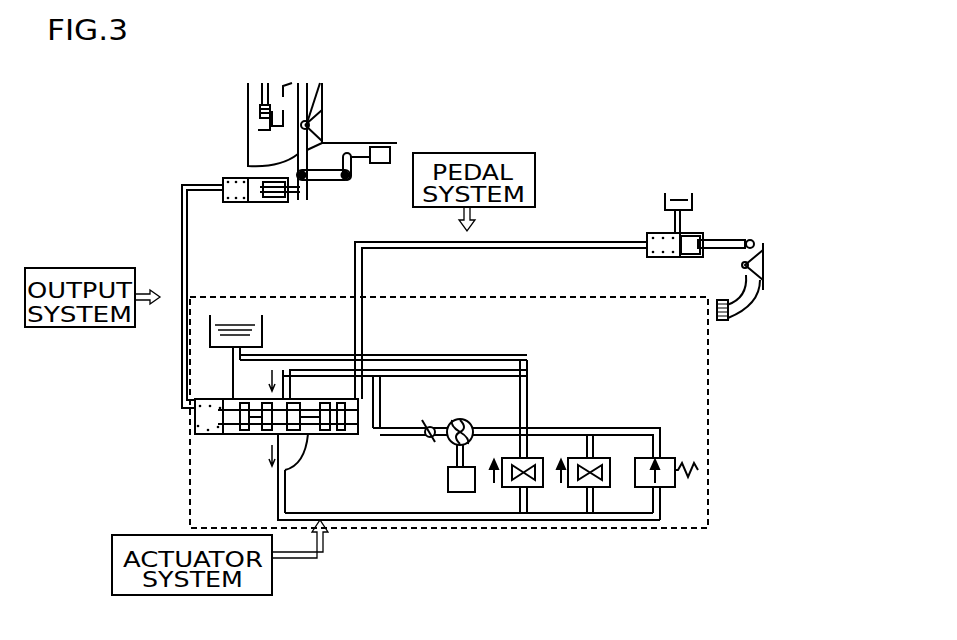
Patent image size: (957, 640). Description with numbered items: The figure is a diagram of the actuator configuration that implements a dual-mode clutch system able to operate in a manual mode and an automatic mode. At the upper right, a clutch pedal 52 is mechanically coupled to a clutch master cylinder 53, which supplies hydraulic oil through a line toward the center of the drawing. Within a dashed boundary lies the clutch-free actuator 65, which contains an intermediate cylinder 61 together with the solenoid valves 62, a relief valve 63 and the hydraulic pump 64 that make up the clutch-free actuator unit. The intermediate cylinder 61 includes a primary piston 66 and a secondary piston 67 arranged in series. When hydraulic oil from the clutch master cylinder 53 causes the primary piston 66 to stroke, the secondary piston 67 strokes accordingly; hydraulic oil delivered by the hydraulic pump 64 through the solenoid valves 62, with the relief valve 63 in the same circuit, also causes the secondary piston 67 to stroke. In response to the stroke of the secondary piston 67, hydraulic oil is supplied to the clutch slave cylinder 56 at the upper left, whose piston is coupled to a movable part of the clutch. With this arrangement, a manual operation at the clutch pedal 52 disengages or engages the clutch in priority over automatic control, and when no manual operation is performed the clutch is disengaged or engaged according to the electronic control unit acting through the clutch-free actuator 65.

The clutch pedal 52 is at (723, 237).
The clutch master cylinder 53 is at (648, 233).
The clutch slave cylinder 56 is at (223, 178).
The intermediate cylinder 61 is at (296, 398).
The solenoid valves 62 is at (580, 458).
The relief valve 63 is at (673, 487).
The hydraulic pump 64 is at (443, 437).
The clutch-free actuator 65 is at (410, 331).
The primary piston 66 is at (278, 474).
The secondary piston 67 is at (240, 435).